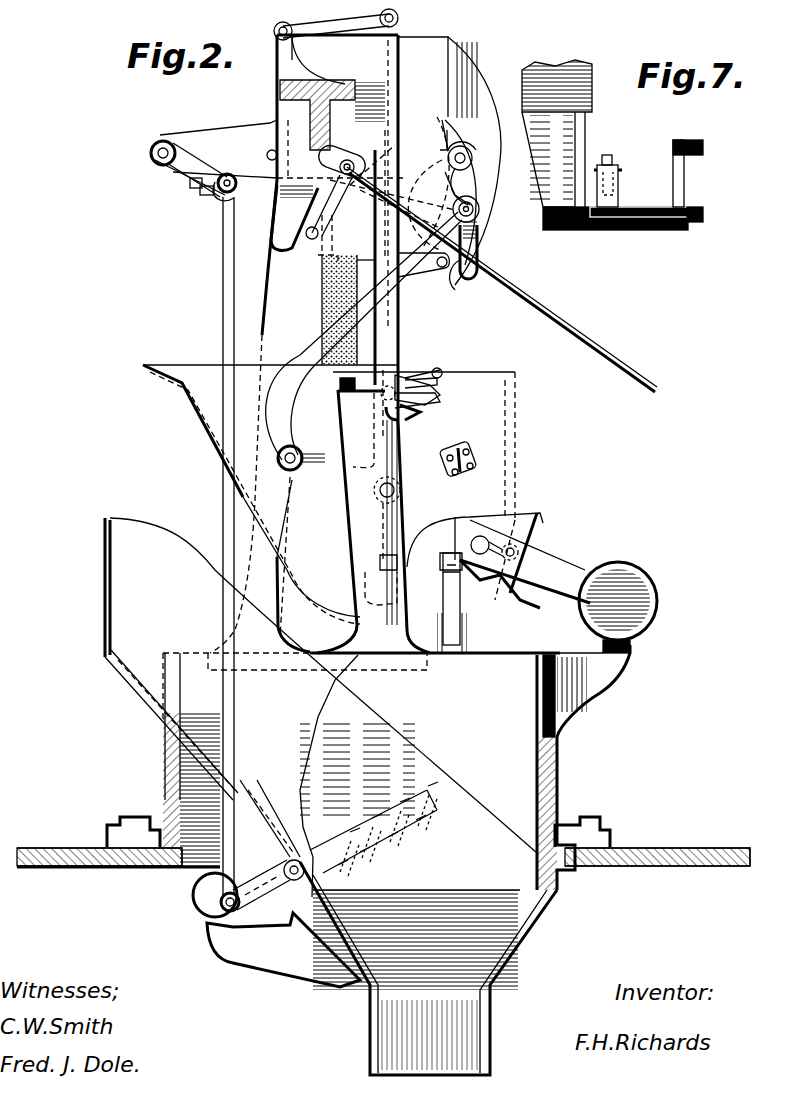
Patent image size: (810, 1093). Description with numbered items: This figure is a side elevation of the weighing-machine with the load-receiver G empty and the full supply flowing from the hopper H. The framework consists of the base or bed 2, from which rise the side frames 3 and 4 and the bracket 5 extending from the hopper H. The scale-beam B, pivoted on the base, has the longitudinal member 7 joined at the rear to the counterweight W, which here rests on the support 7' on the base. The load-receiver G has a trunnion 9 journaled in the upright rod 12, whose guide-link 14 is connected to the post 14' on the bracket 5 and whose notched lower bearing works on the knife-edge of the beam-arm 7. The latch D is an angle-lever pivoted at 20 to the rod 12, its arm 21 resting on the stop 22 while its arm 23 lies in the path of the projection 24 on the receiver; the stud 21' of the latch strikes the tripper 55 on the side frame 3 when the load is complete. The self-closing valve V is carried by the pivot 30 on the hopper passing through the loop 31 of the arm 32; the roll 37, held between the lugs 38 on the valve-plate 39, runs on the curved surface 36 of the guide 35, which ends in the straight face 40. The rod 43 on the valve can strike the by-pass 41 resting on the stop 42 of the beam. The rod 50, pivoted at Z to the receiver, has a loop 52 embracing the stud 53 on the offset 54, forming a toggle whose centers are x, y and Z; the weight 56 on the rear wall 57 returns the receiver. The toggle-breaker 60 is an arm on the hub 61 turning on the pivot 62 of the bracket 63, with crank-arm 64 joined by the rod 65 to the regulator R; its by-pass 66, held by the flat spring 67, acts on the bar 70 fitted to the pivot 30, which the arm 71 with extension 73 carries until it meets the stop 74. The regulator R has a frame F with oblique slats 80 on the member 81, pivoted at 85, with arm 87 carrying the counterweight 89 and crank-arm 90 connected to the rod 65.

In FIG. 2, the base or bed 2 is at (558, 765).
In FIG. 2, the side frame 3 is at (356, 538).
In FIG. 2, the side frame 4 is at (280, 311).
In FIG. 2, the bracket 5 is at (336, 82).
In FIG. 2, the longitudinal member of scale-beam 7 is at (525, 560).
In FIG. 2, the support 7' is at (596, 691).
In FIG. 2, the trunnion or pivot 9 is at (378, 500).
In FIG. 2, the upright rod 12 is at (399, 300).
In FIG. 2, the guide-link 14 is at (336, 20).
In FIG. 2, the post 14' is at (318, 60).
In FIG. 2, the pivot 20 is at (388, 385).
In FIG. 2, the arm of latch 21 is at (430, 356).
In FIG. 2, the stud of latch 21' is at (455, 363).
In FIG. 2, the stop 22 is at (442, 381).
In FIG. 2, the arm of latch 23 is at (425, 412).
In FIG. 2, the projection 24 is at (465, 452).
In FIG. 2, the projecting pivot 30 is at (355, 160).
In FIG. 2, the longitudinal loop 31 is at (375, 118).
In FIG. 2, the arm of valve 32 is at (355, 165).
In FIG. 2, the track or guide 35 is at (485, 163).
In FIG. 2, the curved surface 36 is at (458, 145).
In FIG. 2, the antifriction-roll 37 is at (472, 157).
In FIG. 2, the lug 38 is at (478, 183).
In FIG. 2, the valve-plate 39 is at (455, 142).
In FIG. 2, the straight face 40 is at (463, 266).
In FIG. 2, the by-pass 41 is at (512, 545).
In FIG. 2, the stop 42 is at (497, 580).
In FIG. 2, the rod 43 is at (562, 318).
In FIG. 2, the rod 50 is at (298, 352).
In FIG. 2, the longitudinal loop 52 is at (480, 208).
In FIG. 2, the stud 53 is at (476, 214).
In FIG. 2, the offset of valve 54 is at (440, 205).
In FIG. 2, the tripper 55 is at (447, 397).
In FIG. 2, the weight 56 is at (540, 527).
In FIG. 2, the rear wall 57 is at (516, 433).
In FIG. 2, the toggle-breaker 60 is at (190, 183).
In FIG. 7, the toggle-breaker 60 is at (638, 183).
In FIG. 2, the hub or sleeve 61 is at (158, 145).
In FIG. 7, the hub or sleeve 61 is at (630, 229).
In FIG. 2, the pivot 62 is at (156, 160).
In FIG. 7, the pivot 62 is at (703, 215).
In FIG. 2, the bracket 63 is at (237, 133).
In FIG. 7, the bracket 63 is at (586, 135).
In FIG. 2, the crank-arm 64 is at (212, 165).
In FIG. 7, the crank-arm 64 is at (684, 177).
In FIG. 2, the rod 65 is at (218, 246).
In FIG. 2, the by-pass device 66 is at (204, 192).
In FIG. 7, the by-pass device 66 is at (612, 165).
In FIG. 2, the flat spring 67 is at (220, 196).
In FIG. 2, the bar 70 is at (300, 222).
In FIG. 2, the forwardly-extending arm 71 is at (330, 195).
In FIG. 2, the lateral extension 73 is at (330, 240).
In FIG. 2, the stop 74 is at (269, 151).
In FIG. 2, the bars or slats 80 is at (366, 834).
In FIG. 2, the longitudinal member of frame 81 is at (425, 813).
In FIG. 2, the pivot 85 is at (303, 882).
In FIG. 2, the arm 87 is at (268, 830).
In FIG. 2, the counterweight 89 is at (195, 897).
In FIG. 2, the crank-arm 90 is at (265, 920).
In FIG. 2, the scale-beam B is at (527, 545).
In FIG. 2, the detent or latch D is at (405, 372).
In FIG. 2, the frame F is at (437, 797).
In FIG. 2, the load-receiver G is at (205, 415).
In FIG. 2, the supply-chute or hopper H is at (428, 42).
In FIG. 7, the supply-chute or hopper H is at (545, 68).
In FIG. 2, the regulator R is at (373, 831).
In FIG. 2, the valve V is at (428, 183).
In FIG. 2, the counterweight W is at (634, 578).
In FIG. 2, the pivot of rod Z is at (285, 466).
In FIG. 2, the toggle center x is at (478, 228).
In FIG. 2, the toggle center y is at (400, 492).